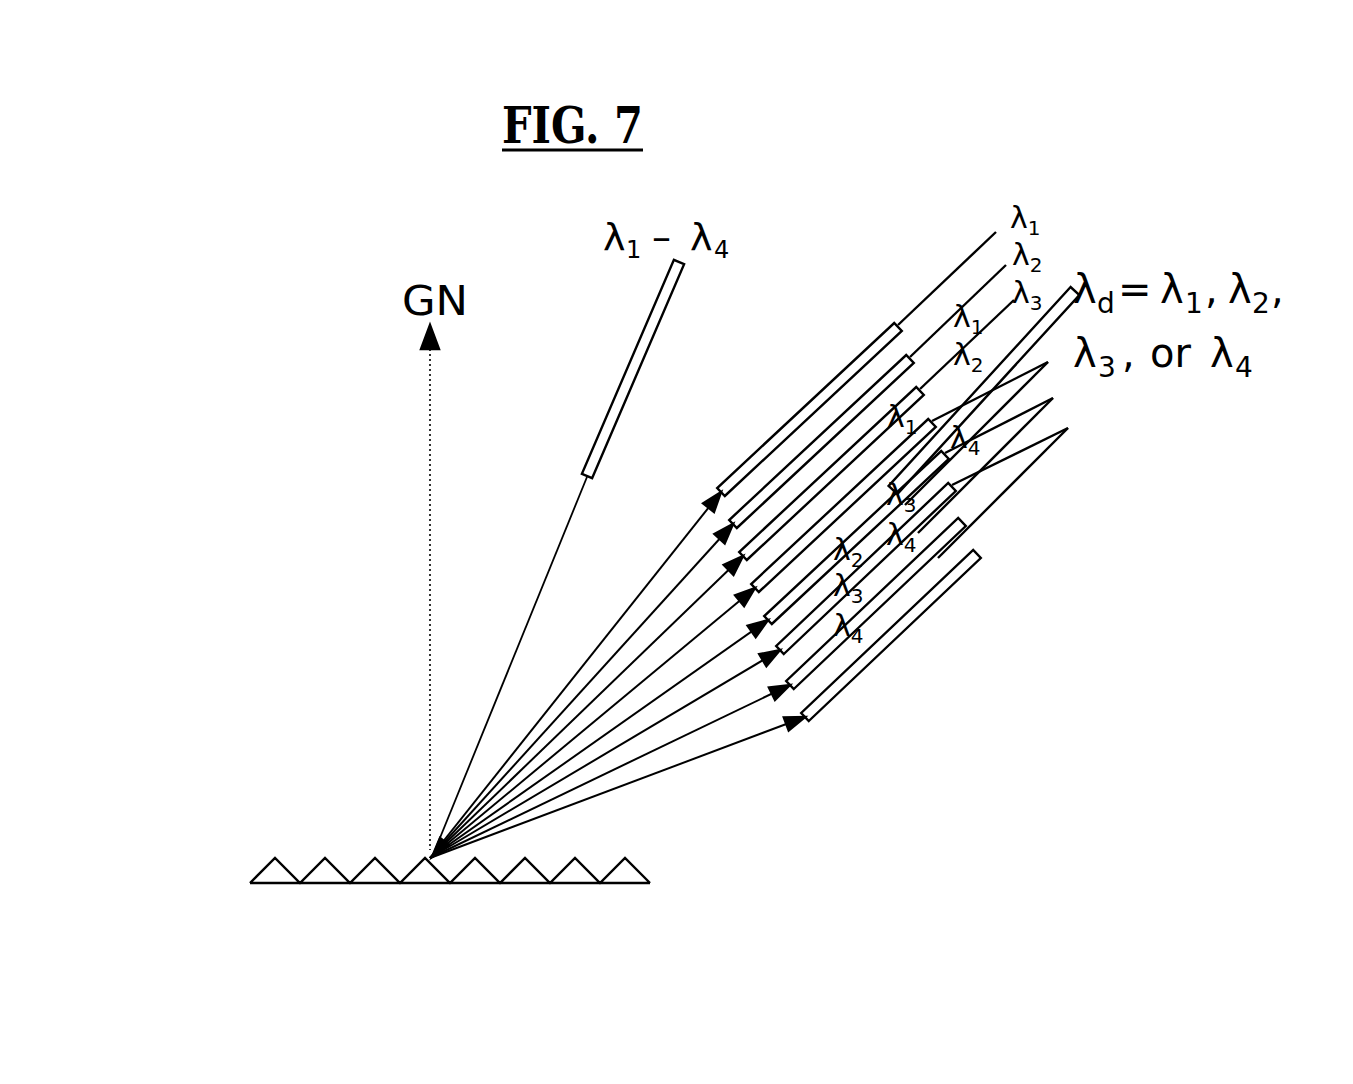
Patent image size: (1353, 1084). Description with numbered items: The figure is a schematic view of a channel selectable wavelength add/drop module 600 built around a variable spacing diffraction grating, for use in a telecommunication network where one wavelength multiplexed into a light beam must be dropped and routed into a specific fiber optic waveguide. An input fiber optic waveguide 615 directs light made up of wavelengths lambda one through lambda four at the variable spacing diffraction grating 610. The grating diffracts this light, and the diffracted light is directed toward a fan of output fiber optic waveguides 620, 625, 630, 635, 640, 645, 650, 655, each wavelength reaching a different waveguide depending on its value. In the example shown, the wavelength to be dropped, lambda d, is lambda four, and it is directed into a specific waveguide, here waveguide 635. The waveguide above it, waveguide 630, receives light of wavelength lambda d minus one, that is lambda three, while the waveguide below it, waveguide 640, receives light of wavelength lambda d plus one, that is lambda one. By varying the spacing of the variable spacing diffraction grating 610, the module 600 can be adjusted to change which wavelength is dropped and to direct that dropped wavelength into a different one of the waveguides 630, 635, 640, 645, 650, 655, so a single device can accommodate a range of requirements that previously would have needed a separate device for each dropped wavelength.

The channel selectable wavelength add/drop module 600 is at (336, 692).
The variable spacing diffraction grating 610 is at (648, 876).
The fiber optic waveguide 615 is at (633, 325).
The fiber optic waveguide 620 is at (901, 333).
The fiber optic waveguide 625 is at (913, 365).
The fiber optic waveguide 630 is at (923, 397).
The fiber optic waveguide 635 is at (927, 442).
The fiber optic waveguide 640 is at (937, 480).
The fiber optic waveguide 645 is at (935, 523).
The fiber optic waveguide 650 is at (938, 562).
The fiber optic waveguide 655 is at (910, 627).